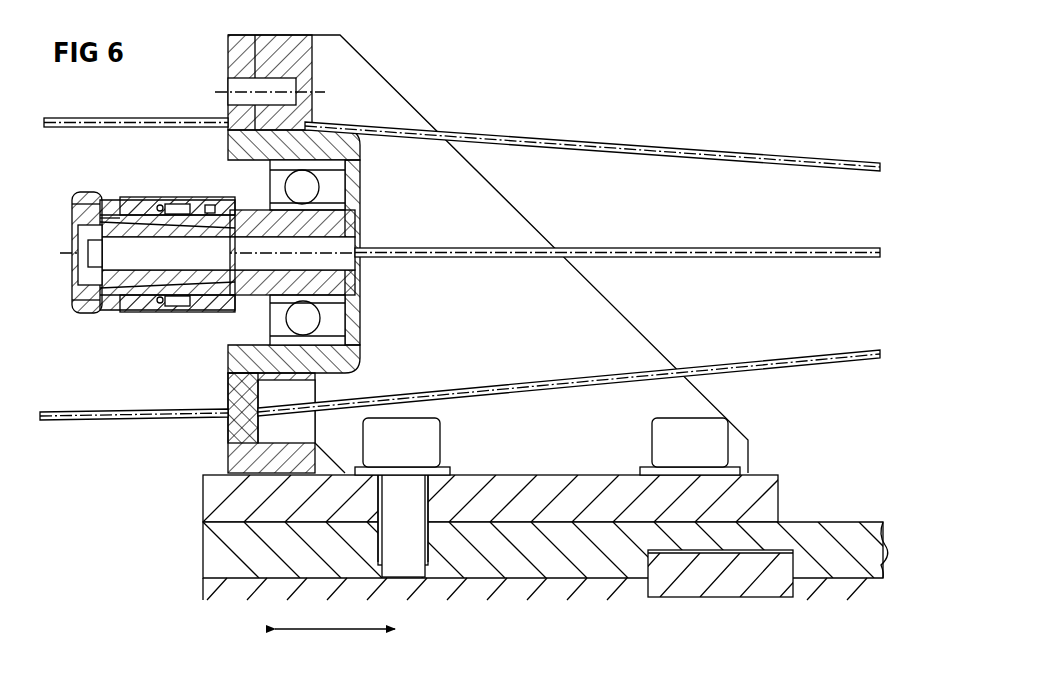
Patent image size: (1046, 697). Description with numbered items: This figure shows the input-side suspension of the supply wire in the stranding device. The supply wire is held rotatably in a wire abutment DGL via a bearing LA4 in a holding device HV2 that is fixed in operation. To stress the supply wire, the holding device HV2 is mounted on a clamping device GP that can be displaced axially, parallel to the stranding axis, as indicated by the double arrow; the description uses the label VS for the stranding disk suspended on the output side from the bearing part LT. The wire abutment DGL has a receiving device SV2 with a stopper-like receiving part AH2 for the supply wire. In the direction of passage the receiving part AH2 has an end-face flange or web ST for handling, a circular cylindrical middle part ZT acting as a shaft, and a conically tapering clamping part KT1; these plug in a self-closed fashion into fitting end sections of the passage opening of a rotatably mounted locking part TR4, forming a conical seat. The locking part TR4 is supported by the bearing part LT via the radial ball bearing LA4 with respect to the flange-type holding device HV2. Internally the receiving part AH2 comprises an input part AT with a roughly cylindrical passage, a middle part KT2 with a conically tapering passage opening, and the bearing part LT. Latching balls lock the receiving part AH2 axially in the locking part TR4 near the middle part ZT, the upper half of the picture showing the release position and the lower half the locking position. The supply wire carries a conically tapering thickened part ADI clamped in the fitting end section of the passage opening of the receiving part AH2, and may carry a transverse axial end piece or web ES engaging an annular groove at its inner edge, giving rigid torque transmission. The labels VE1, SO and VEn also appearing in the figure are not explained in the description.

The wire abutment DGL is at (395, 80).
The middle part KT2 is at (240, 147).
The clamping part KT1 is at (222, 128).
The bearing LA4 is at (360, 178).
The bearing part LT is at (360, 222).
The receiving device SV2 is at (117, 333).
The input part AT is at (112, 200).
The receiving part AH2 is at (80, 181).
The thickened part ADI is at (92, 247).
The end piece ES is at (72, 266).
The flange ST is at (73, 203).
The middle part ZT is at (100, 226).
The holding device HV2 is at (230, 458).
The locking part TR4 is at (230, 313).
The clamping device GP is at (220, 553).
The first connecting element VE1 is at (578, 148).
The axis SO is at (440, 248).
The n-th connecting element VEn is at (736, 367).
The stranding disk VS is at (350, 630).